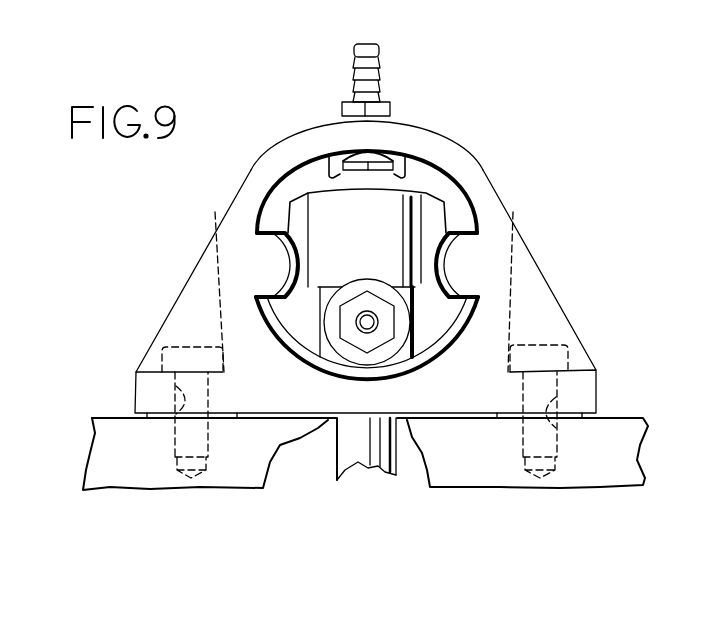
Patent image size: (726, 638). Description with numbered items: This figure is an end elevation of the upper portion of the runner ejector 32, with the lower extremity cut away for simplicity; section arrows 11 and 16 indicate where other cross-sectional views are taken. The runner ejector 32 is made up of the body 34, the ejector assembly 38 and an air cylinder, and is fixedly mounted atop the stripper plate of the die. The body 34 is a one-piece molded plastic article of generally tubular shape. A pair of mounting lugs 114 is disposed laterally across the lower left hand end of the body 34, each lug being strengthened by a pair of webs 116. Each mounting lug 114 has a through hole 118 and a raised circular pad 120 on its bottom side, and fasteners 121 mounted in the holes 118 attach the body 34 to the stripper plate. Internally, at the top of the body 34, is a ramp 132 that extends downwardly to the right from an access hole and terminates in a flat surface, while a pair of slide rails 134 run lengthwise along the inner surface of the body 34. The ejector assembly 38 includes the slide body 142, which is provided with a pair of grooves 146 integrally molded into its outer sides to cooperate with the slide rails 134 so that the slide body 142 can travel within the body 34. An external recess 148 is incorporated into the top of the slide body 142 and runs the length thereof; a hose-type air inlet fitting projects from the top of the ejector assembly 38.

The runner ejector 32 is at (587, 179).
The body 34 is at (497, 183).
The ejector assembly 38 is at (368, 212).
The mounting lugs 114 is at (149, 390).
The webs 116 is at (168, 329).
The through hole 118 is at (173, 427).
The raised circular pad 120 is at (223, 420).
The fasteners 121 is at (571, 345).
The ramp 132 is at (371, 174).
The slide rails 134 is at (268, 249).
The slide body 142 is at (460, 180).
The grooves 146 is at (290, 266).
The external recess 148 is at (330, 156).
The section line 11 is at (383, 32).
The section line 16 is at (395, 267).